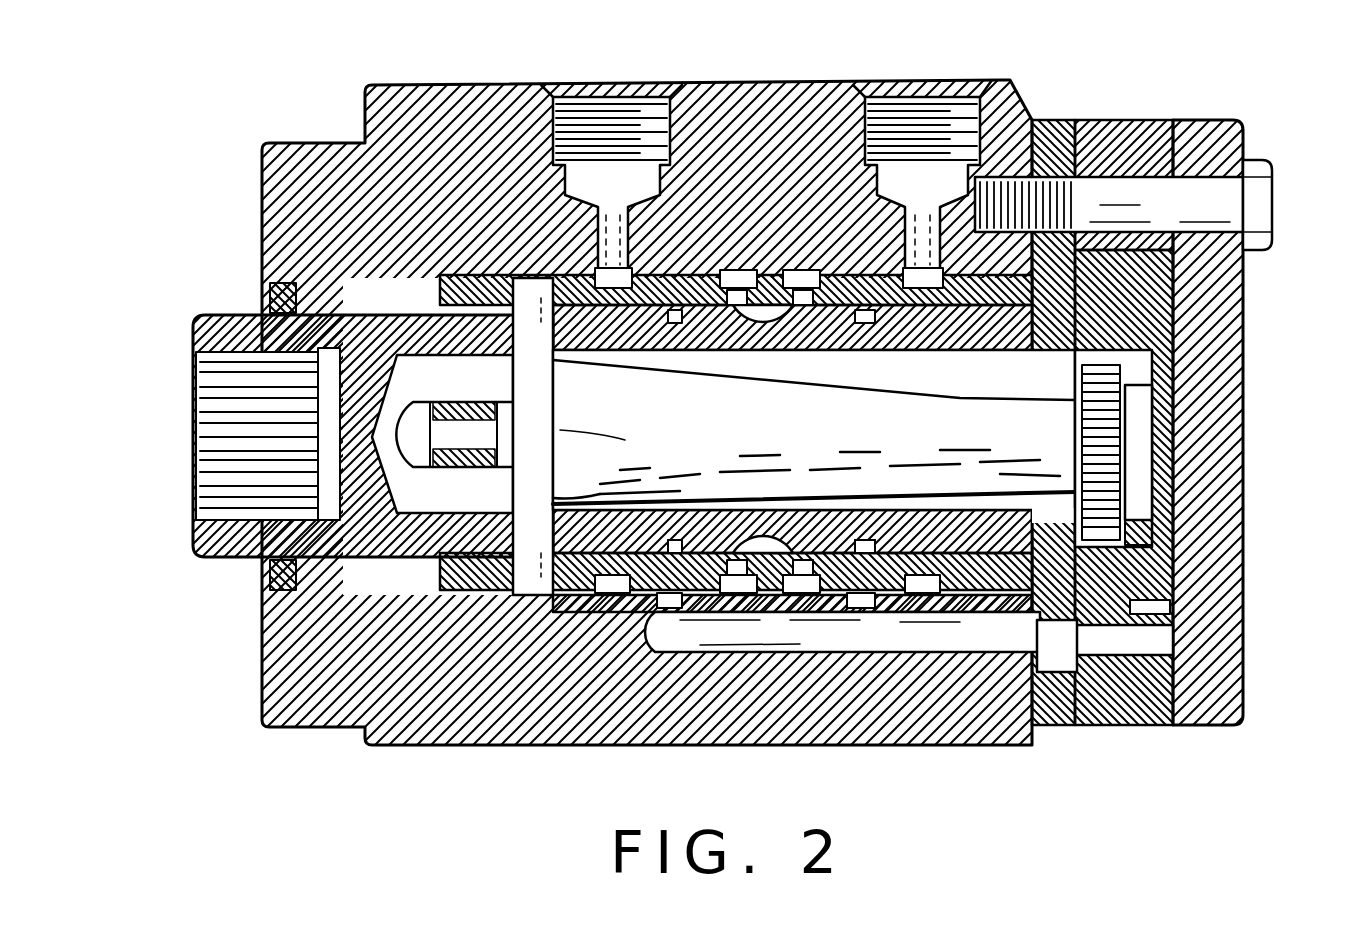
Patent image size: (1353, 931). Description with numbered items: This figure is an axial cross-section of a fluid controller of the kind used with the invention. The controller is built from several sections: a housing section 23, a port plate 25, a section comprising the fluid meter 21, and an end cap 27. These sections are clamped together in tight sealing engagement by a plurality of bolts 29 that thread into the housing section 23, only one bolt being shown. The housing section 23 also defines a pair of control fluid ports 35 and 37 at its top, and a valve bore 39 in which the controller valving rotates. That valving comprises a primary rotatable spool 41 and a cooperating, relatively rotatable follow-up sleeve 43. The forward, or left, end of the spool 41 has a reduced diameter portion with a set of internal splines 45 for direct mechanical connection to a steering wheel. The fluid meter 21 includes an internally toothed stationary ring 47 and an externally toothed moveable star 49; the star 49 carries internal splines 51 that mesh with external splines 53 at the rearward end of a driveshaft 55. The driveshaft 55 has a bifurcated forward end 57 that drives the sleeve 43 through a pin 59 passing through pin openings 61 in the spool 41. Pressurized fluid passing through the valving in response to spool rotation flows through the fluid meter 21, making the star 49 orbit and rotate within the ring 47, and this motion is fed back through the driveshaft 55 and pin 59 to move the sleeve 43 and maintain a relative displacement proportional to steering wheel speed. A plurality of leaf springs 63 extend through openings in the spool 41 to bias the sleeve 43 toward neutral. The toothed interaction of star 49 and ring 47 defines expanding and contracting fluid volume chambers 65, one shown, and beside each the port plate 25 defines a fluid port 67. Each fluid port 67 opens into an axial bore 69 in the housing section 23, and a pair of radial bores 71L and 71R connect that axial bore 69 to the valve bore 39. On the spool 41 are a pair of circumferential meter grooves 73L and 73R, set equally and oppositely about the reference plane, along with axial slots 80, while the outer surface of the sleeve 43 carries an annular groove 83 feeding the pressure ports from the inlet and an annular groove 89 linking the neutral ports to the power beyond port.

The fluid meter 21 is at (1128, 100).
The housing section 23 is at (480, 120).
The port plate 25 is at (1048, 130).
The end cap 27 is at (1245, 445).
The bolts 29 is at (1265, 215).
The control fluid port 35 is at (960, 125).
The control fluid port 37 is at (650, 125).
The valve bore 39 is at (690, 275).
The spool 41 is at (900, 325).
The sleeve 43 is at (707, 312).
The internal splines 45 is at (215, 440).
The stationary ring 47 is at (1115, 725).
The star 49 is at (1140, 610).
The internal splines 51 is at (1132, 360).
The external splines 53 is at (1090, 456).
The driveshaft 55 is at (882, 452).
The bifurcated forward end 57 is at (570, 446).
The pin 59 is at (545, 330).
The pin openings 61 is at (580, 492).
The leaf springs 63 is at (455, 468).
The fluid volume chamber 65 is at (1150, 644).
The fluid port 67 is at (1053, 655).
The axial bore 69 is at (752, 632).
The radial bore 71L is at (675, 610).
The radial bore 71R is at (870, 610).
The meter groove 73L is at (678, 545).
The meter groove 73R is at (873, 545).
The axial slots 80 is at (765, 318).
The annular groove 83 is at (742, 272).
The annular groove 89 is at (805, 272).